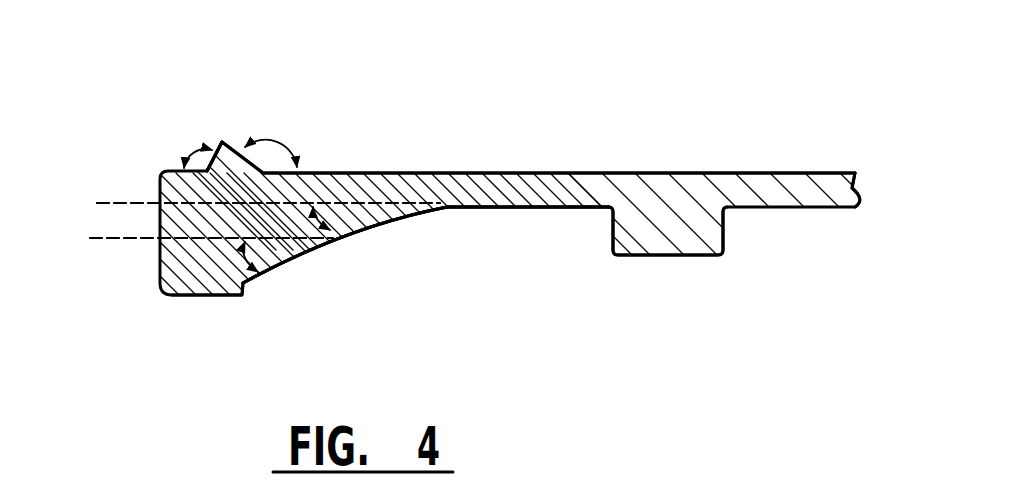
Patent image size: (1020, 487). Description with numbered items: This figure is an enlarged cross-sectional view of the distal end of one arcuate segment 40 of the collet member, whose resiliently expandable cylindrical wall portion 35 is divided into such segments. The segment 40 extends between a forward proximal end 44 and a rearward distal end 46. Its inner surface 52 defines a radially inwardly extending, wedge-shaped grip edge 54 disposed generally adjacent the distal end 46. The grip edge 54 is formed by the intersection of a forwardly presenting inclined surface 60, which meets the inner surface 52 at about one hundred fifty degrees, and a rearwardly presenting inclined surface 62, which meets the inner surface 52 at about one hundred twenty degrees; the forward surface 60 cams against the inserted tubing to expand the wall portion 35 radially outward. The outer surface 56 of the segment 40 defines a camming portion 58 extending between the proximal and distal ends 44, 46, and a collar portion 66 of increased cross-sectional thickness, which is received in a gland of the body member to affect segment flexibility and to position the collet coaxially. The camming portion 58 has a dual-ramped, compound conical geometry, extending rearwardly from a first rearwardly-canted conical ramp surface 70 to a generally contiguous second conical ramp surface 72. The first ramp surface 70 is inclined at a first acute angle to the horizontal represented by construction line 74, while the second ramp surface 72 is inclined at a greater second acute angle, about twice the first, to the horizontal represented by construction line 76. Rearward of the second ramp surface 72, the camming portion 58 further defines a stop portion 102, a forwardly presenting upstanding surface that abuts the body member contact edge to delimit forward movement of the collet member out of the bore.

The arcuate segment 40 is at (396, 82).
The forward proximal end 44 is at (882, 178).
The rearward distal end 46 is at (158, 222).
The inner surface 52 is at (368, 172).
The grip edge 54 is at (225, 141).
The outer surface 56 is at (500, 207).
The camming portion 58 is at (450, 248).
The forwardly presenting inclined surface 60 is at (240, 146).
The rearwardly presenting inclined surface 62 is at (217, 148).
The collar portion 66 is at (670, 255).
The first conical ramp surface 70 is at (398, 220).
The second conical ramp surface 72 is at (325, 247).
The construction line 74 is at (130, 202).
The construction line 76 is at (140, 239).
The stop portion 102 is at (247, 285).
The wall portion 35 is at (568, 193).